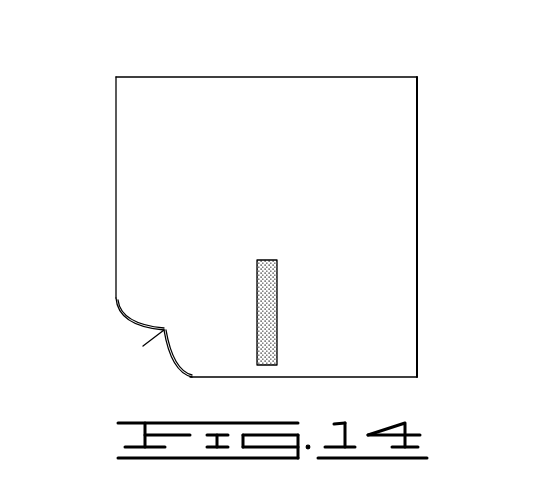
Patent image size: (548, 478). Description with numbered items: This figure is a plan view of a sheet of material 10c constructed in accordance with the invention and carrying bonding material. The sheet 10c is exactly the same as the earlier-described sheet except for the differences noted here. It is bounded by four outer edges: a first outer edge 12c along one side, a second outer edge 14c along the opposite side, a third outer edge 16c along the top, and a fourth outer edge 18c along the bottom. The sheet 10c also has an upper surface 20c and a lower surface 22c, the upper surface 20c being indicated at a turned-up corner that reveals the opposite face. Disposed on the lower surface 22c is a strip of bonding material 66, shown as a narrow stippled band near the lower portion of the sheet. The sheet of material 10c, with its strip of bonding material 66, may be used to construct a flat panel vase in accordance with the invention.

The sheet of material 10c is at (238, 38).
The first outer edge 12c is at (418, 143).
The second outer edge 14c is at (116, 238).
The third outer edge 16c is at (305, 77).
The fourth outer edge 18c is at (398, 377).
The upper surface 20c is at (157, 337).
The lower surface 22c is at (157, 115).
The strip of bonding material 66 is at (277, 272).